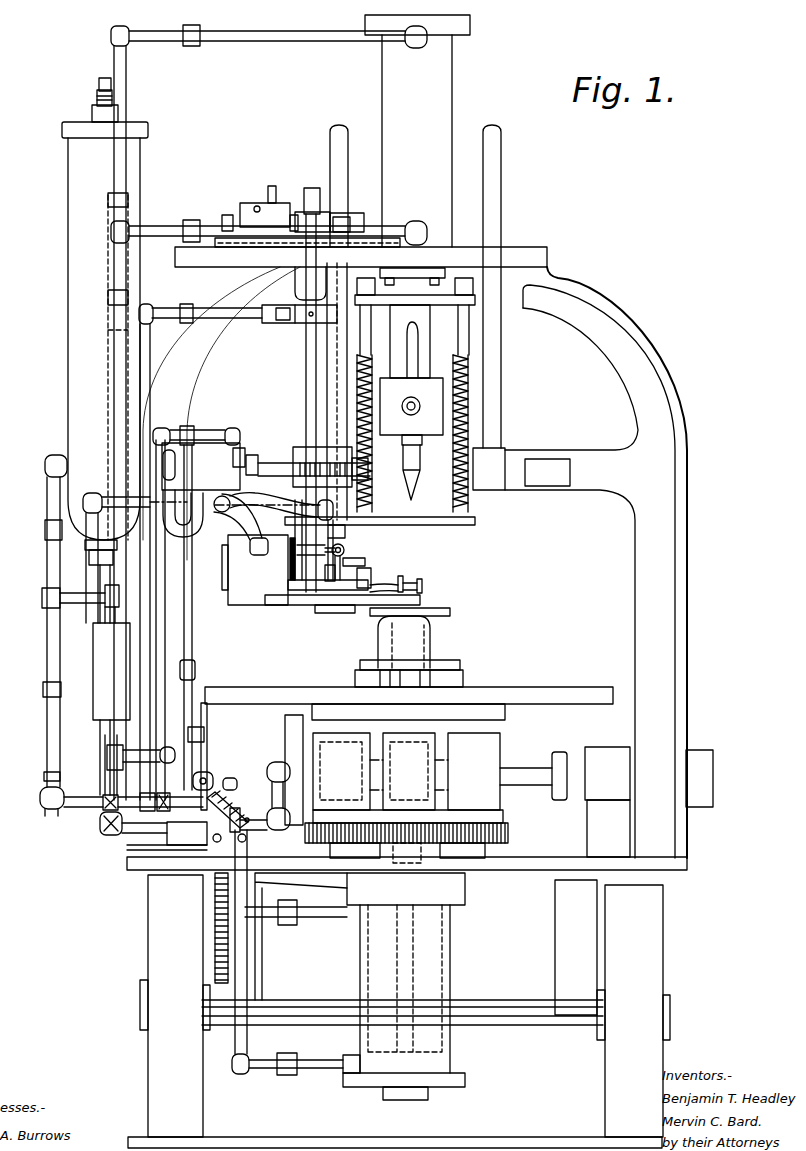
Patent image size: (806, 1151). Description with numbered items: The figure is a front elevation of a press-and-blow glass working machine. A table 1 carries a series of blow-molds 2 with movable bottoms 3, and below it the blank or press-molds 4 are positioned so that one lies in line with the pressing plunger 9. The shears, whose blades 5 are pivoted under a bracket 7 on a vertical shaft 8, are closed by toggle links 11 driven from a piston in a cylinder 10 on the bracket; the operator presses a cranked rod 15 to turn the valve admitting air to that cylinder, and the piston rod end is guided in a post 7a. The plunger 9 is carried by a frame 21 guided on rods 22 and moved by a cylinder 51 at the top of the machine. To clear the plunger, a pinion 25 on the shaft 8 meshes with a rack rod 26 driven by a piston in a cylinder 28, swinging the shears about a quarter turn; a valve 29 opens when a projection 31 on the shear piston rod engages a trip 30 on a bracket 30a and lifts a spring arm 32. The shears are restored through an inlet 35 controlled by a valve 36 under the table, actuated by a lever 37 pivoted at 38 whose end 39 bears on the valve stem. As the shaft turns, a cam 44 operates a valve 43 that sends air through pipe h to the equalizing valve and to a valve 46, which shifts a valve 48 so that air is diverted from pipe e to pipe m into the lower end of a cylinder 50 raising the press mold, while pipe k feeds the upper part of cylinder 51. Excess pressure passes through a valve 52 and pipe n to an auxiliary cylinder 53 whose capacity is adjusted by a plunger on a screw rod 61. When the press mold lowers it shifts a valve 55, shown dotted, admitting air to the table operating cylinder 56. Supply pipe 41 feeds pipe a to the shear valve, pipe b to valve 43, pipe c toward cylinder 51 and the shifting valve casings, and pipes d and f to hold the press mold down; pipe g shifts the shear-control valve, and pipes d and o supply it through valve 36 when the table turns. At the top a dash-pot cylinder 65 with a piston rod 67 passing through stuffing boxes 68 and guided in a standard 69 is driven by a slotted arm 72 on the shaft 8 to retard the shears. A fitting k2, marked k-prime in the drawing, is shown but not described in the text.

The table 1 is at (270, 687).
The blow-molds 2 is at (440, 638).
The movable bottoms 3 is at (400, 672).
The press-molds 4 is at (509, 798).
The shear blades 5 is at (432, 610).
The bracket 7 is at (285, 605).
The post 7a is at (362, 588).
The vertical shaft 8 is at (312, 188).
The plunger 9 is at (417, 474).
The cylinder 10 is at (258, 570).
The toggle links 11 is at (330, 613).
The cranked rod 15 is at (402, 591).
The plunger frame 21 is at (440, 348).
The guide rods 22 is at (333, 400).
The pinion 25 is at (300, 462).
The rack rod 26 is at (368, 467).
The cylinder 28 is at (196, 458).
The valve 29 is at (350, 508).
The trip 30 is at (365, 563).
The bracket 30a is at (346, 551).
The projection 31 is at (328, 583).
The spring arm 32 is at (344, 547).
The inlet 35 is at (243, 448).
The valve 36 is at (210, 774).
The lever 37 is at (207, 709).
The pivot 38 is at (205, 734).
The lever end 39 is at (230, 790).
The supply pipe 41 is at (100, 828).
The valve 43 is at (278, 324).
The cam 44 is at (336, 324).
The valve 46 is at (155, 835).
The valve 48 is at (183, 850).
The cylinder 50 is at (438, 969).
The cylinder 51 is at (417, 131).
The valve 52 is at (40, 805).
The auxiliary pressure cylinder 53 is at (68, 358).
The valve 55 is at (241, 815).
The table operating cylinder 56 is at (268, 740).
The screw rod 61 is at (97, 94).
The cylinder 65 is at (248, 212).
The piston rod 67 is at (355, 222).
The stuffing boxes 68 is at (222, 220).
The standard 69 is at (348, 222).
The arm 72 is at (320, 240).
The pipe a is at (225, 512).
The pipe b is at (143, 308).
The pipe c is at (210, 237).
The pipe d is at (237, 784).
The pipe e is at (150, 850).
The pipe f is at (316, 917).
The pipe g is at (183, 537).
The pipe h is at (222, 312).
The pipe k is at (292, 42).
The pipe fitting k' k2 is at (103, 805).
The pipe m is at (316, 1060).
The pipe n is at (47, 628).
The pipe o is at (215, 435).